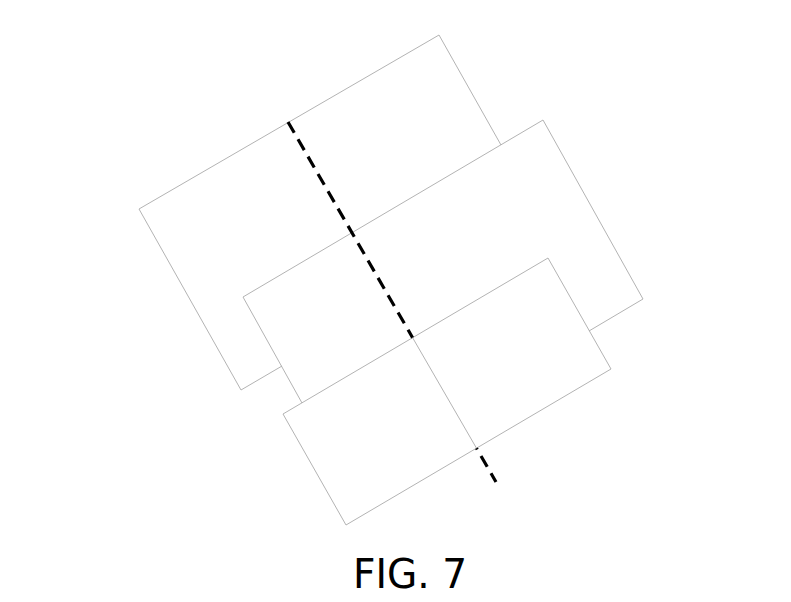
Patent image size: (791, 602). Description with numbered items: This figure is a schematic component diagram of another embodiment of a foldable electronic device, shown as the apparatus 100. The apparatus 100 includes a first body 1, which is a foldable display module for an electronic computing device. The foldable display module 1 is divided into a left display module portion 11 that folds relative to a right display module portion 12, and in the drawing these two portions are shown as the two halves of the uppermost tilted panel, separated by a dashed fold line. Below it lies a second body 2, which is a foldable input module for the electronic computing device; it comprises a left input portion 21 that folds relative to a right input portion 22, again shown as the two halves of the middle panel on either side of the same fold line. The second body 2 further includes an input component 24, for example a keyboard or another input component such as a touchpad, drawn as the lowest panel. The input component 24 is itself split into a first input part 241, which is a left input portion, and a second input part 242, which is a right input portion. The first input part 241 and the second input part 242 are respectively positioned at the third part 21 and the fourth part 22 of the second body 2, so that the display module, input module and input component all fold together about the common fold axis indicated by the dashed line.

The apparatus 100 is at (660, 74).
The first body 1 is at (53, 135).
The left display module portion 11 is at (210, 229).
The right display module portion 12 is at (382, 177).
The second body 2 is at (728, 227).
The left input portion 21 is at (376, 328).
The right input portion 22 is at (500, 257).
The input component 24 is at (741, 332).
The first input part 241 is at (407, 432).
The second input part 242 is at (526, 365).